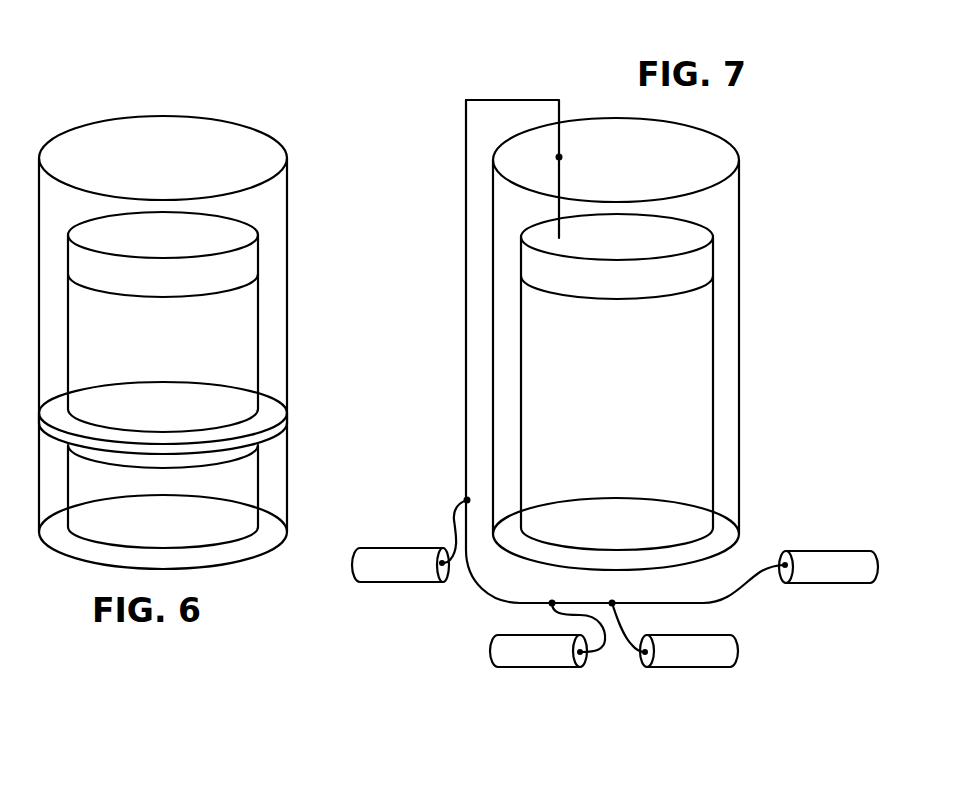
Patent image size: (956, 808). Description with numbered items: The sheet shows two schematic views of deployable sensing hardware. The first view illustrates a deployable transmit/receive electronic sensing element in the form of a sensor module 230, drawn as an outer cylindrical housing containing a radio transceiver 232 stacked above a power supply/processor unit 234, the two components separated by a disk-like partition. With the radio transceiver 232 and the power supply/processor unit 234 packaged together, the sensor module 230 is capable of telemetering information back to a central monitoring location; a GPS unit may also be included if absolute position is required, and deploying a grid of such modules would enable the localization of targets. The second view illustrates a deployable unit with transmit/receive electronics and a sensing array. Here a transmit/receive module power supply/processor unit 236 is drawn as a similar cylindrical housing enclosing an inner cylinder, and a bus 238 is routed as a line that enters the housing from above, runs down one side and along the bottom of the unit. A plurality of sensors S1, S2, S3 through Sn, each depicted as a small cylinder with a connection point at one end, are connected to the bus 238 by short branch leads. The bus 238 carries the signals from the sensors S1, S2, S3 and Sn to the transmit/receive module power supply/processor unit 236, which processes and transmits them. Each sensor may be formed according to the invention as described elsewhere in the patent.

In FIG. 6, the sensor module 230 is at (288, 270).
In FIG. 6, the radio transceiver 232 is at (260, 320).
In FIG. 6, the power supply/processor unit 234 is at (260, 473).
In FIG. 7, the transmit/receive module power supply/processor unit 236 is at (739, 313).
In FIG. 7, the bus 238 is at (465, 270).
In FIG. 7, the sensor S1 is at (398, 585).
In FIG. 7, the sensor S2 is at (548, 667).
In FIG. 7, the sensor S3 is at (692, 667).
In FIG. 7, the sensor Sn is at (840, 585).